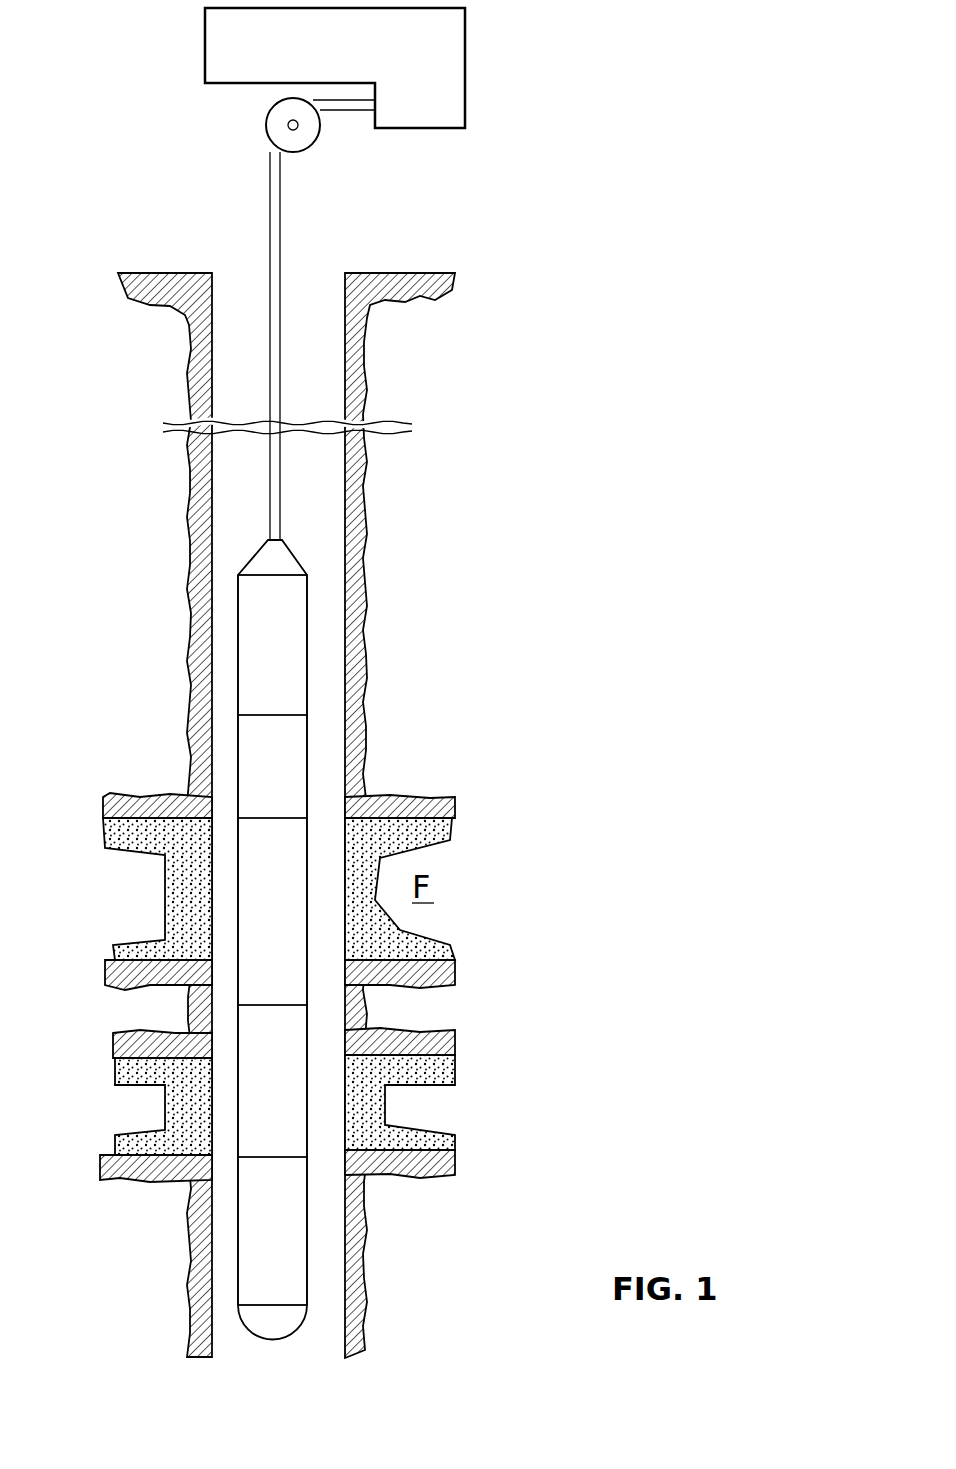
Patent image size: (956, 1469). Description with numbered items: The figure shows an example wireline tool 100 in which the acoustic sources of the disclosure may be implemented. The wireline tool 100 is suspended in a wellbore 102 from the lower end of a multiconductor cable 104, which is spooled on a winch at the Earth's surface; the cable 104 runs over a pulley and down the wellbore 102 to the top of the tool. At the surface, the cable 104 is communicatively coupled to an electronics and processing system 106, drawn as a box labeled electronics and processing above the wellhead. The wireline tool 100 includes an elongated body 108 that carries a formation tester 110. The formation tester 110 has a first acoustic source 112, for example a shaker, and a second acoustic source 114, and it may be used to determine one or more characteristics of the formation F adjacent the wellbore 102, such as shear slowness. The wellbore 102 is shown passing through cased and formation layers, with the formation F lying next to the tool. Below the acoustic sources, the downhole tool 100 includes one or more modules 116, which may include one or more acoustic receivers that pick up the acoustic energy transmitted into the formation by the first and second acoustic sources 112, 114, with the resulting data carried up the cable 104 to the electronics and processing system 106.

The wireline tool 100 is at (331, 940).
The wellbore 102 is at (347, 543).
The multiconductor cable 104 is at (280, 292).
The electronics and processing system 106 is at (447, 88).
The elongated body 108 is at (257, 660).
The formation tester 110 is at (295, 760).
The first acoustic source 112 is at (250, 828).
The second acoustic source 114 is at (275, 1122).
The modules 116 is at (272, 1212).